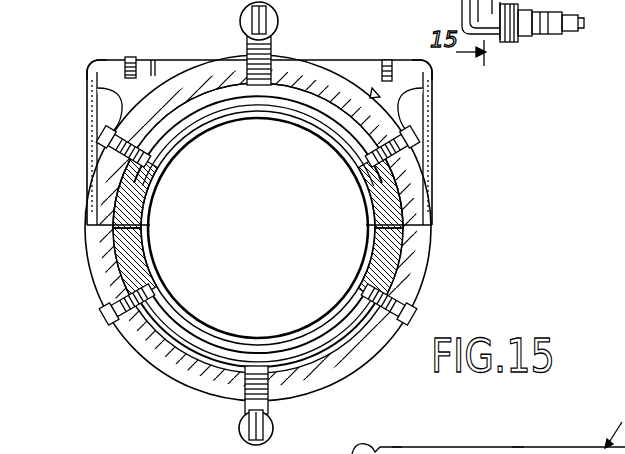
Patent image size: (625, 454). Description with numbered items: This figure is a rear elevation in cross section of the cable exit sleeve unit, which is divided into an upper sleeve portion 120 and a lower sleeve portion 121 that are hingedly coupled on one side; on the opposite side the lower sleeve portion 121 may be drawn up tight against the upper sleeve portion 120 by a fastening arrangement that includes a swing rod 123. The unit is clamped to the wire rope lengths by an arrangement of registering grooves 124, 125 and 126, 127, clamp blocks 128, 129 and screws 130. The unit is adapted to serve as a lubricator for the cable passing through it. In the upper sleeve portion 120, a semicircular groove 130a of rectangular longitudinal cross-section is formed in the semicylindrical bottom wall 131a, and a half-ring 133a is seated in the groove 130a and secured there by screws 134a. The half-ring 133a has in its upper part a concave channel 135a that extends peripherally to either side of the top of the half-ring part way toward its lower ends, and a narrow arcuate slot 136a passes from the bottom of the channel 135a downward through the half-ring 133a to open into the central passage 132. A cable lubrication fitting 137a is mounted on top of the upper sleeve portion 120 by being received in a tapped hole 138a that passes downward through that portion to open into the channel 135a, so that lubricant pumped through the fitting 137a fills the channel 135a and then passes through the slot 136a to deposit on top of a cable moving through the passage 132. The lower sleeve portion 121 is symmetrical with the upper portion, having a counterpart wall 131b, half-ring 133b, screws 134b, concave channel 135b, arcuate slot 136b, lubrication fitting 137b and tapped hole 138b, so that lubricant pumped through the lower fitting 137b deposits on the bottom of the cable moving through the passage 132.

The upper sleeve portion 120 is at (432, 193).
The lower sleeve portion 121 is at (357, 376).
The swing rod 123 is at (397, 447).
The registering groove 124 is at (376, 91).
The registering groove 125 is at (424, 116).
The registering groove 126 is at (150, 61).
The registering groove 127 is at (106, 104).
The clamp block 128 is at (425, 94).
The clamp block 129 is at (93, 76).
The screw 130 is at (128, 58).
The semicircular groove 130a is at (527, 433).
The semicylindrical bottom wall 131a is at (202, 123).
The semicylindrical wall 131b is at (213, 287).
The passage 132 is at (281, 237).
The half-ring 133a is at (123, 201).
The half-ring 133b is at (112, 266).
The screws 134a is at (108, 142).
The screws 134b is at (112, 316).
The concave channel 135a is at (146, 95).
The concave channel 135b is at (172, 368).
The arcuate slot 136a is at (303, 122).
The arcuate slot 136b is at (297, 343).
The cable lubrication fitting 137a is at (242, 18).
The cable lubrication fitting 137b is at (277, 412).
The tapped hole 138a is at (199, 100).
The tapped hole 138b is at (243, 407).